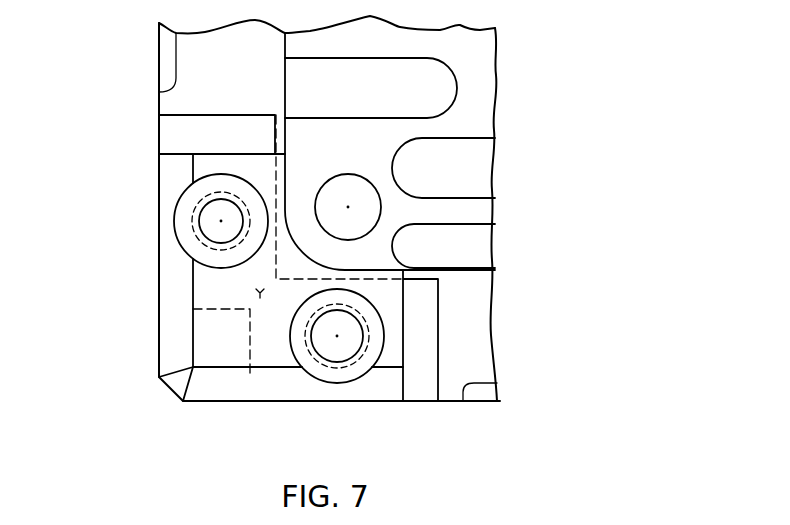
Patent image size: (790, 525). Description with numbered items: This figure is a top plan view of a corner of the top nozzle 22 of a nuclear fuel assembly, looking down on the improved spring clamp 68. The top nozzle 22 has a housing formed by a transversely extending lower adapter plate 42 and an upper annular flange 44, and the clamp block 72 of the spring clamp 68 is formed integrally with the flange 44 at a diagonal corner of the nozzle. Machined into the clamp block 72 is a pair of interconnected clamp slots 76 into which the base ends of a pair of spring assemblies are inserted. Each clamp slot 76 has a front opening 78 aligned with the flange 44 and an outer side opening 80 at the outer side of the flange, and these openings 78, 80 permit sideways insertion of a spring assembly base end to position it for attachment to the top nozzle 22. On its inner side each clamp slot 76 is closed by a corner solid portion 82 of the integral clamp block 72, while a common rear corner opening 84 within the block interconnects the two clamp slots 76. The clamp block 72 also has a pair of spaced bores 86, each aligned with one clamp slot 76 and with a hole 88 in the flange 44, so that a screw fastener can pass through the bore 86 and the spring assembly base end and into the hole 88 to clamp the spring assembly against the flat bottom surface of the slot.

The top nozzle 22 is at (508, 266).
The lower adapter plate 42 is at (486, 213).
The upper annular flange 44 is at (172, 103).
The spring clamp 68 is at (157, 398).
The clamp block 72 is at (202, 333).
The clamp slot 76 is at (183, 294).
The front opening 78 is at (198, 152).
The outer side opening 80 is at (157, 168).
The corner solid portion 82 is at (223, 380).
The common rear corner opening 84 is at (258, 292).
The bore 86 is at (183, 243).
The hole 88 is at (199, 222).